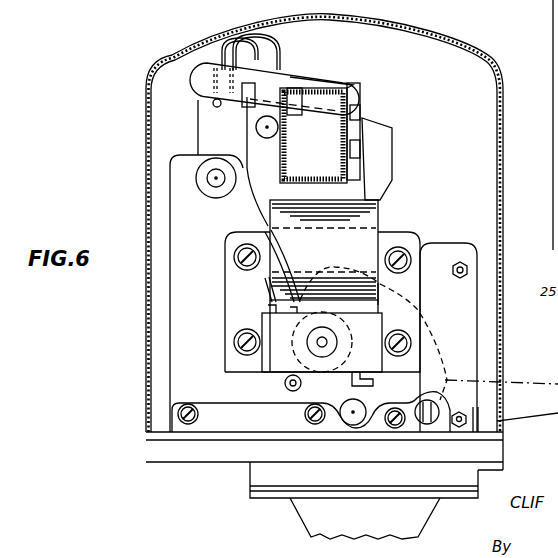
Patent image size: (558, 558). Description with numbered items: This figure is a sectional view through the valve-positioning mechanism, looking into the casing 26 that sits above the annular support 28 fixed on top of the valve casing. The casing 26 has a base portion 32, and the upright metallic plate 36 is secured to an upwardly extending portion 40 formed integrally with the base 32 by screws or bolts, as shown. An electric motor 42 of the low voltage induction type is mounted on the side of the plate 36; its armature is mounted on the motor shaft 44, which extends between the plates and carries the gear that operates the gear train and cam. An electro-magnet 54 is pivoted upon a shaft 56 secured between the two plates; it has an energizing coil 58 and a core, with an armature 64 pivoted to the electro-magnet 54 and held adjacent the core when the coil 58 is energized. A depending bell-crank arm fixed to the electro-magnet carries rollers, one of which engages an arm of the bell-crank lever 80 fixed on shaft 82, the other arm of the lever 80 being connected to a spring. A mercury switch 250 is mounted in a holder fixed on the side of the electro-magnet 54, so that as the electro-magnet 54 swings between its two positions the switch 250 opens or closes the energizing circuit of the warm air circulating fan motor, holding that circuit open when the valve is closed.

The casing 26 is at (146, 143).
The base portion 32 is at (166, 448).
The annular support 28 is at (316, 514).
The metallic plate 36 is at (183, 300).
The shaft 56 is at (216, 178).
The electro-magnet 54 is at (240, 142).
The mercury switch 250 is at (321, 87).
The energizing coil 58 is at (350, 83).
The armature 64 is at (383, 134).
The upwardly extending portion 40 is at (222, 388).
The motor shaft 44 is at (322, 342).
The bell-crank lever 80 is at (418, 308).
The electric motor 42 is at (378, 298).
The shaft 82 is at (427, 402).